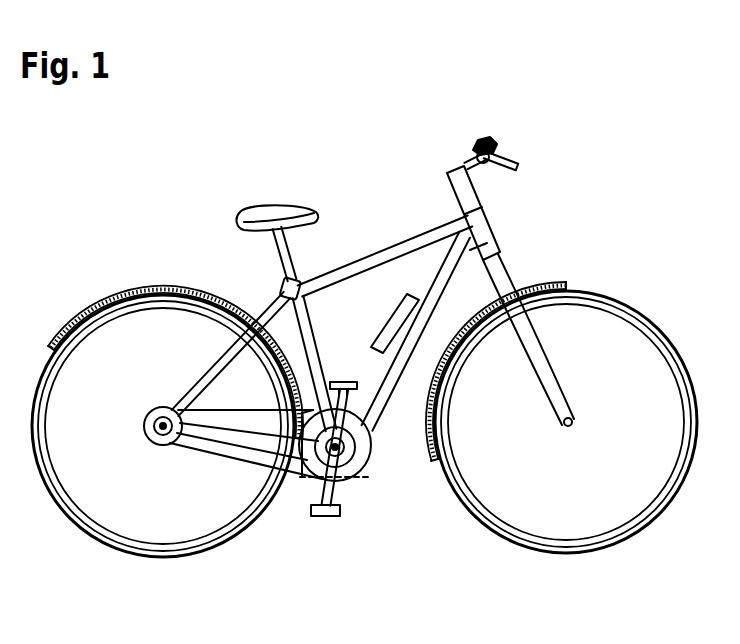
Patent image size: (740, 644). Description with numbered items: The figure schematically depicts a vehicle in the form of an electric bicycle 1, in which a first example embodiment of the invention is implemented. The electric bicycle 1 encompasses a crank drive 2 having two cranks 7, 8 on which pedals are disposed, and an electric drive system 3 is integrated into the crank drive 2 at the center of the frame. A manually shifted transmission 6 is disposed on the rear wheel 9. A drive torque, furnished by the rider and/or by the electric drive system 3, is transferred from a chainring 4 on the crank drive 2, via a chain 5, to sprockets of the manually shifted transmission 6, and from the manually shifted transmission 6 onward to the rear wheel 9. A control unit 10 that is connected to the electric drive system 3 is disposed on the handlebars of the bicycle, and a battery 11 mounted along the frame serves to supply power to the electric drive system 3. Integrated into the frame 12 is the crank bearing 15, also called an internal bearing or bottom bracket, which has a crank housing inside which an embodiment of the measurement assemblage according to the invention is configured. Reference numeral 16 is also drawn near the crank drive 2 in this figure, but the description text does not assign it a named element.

The electric bicycle 1 is at (173, 185).
The crank drive 2 is at (342, 459).
The electric drive system 3 is at (370, 468).
The chainring 4 is at (338, 492).
The chain 5 is at (213, 458).
The manually shifted transmission 6 is at (145, 442).
The crank 7 is at (343, 381).
The crank 8 is at (317, 505).
The rear wheel 9 is at (157, 307).
The control unit 10 is at (479, 137).
The battery 11 is at (403, 293).
The frame 12 is at (352, 268).
The crank bearing 15 is at (376, 473).
The electric motor 16 is at (297, 480).